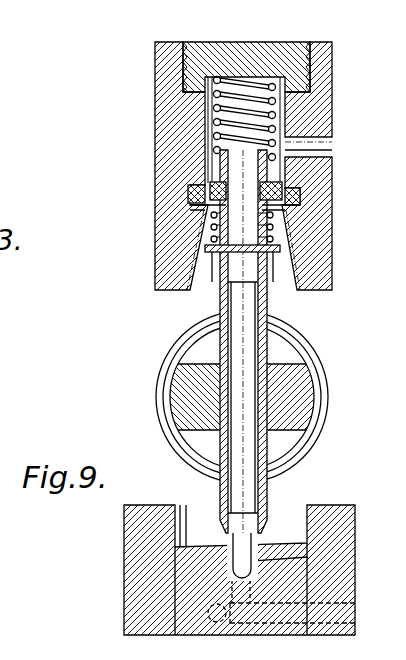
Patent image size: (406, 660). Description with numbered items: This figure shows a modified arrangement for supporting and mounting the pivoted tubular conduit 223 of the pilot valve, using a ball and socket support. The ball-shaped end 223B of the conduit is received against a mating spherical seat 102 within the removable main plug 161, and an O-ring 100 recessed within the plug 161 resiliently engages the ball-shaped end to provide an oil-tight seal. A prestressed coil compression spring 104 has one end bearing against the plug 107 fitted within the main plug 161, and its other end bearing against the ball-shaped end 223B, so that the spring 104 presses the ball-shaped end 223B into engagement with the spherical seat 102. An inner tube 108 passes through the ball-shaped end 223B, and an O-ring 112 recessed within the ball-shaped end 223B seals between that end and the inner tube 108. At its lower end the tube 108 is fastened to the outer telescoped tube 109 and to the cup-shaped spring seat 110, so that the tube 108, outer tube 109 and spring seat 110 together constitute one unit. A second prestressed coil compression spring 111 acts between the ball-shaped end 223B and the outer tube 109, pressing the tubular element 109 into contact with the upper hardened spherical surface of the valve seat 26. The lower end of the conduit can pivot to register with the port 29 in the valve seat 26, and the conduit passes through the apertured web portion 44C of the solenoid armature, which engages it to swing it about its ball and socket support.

The plug 107 is at (292, 43).
The main plug 161 is at (322, 78).
The prestressed coil compression spring 104 is at (262, 102).
The tube 108 is at (305, 136).
The ball-shaped end 223B is at (272, 178).
The O-ring 100 is at (300, 197).
The spherical seat 102 is at (281, 209).
The O-ring 112 is at (200, 176).
The prestressed coil compression spring 111 is at (210, 226).
The cup-shaped spring seat 110 is at (197, 289).
The outer telescoped tube 109 is at (262, 297).
The tubular pivoted conduit 223 is at (268, 310).
The apertured web portion 44C is at (298, 386).
The valve seat 26 is at (308, 557).
The port 29 is at (240, 562).